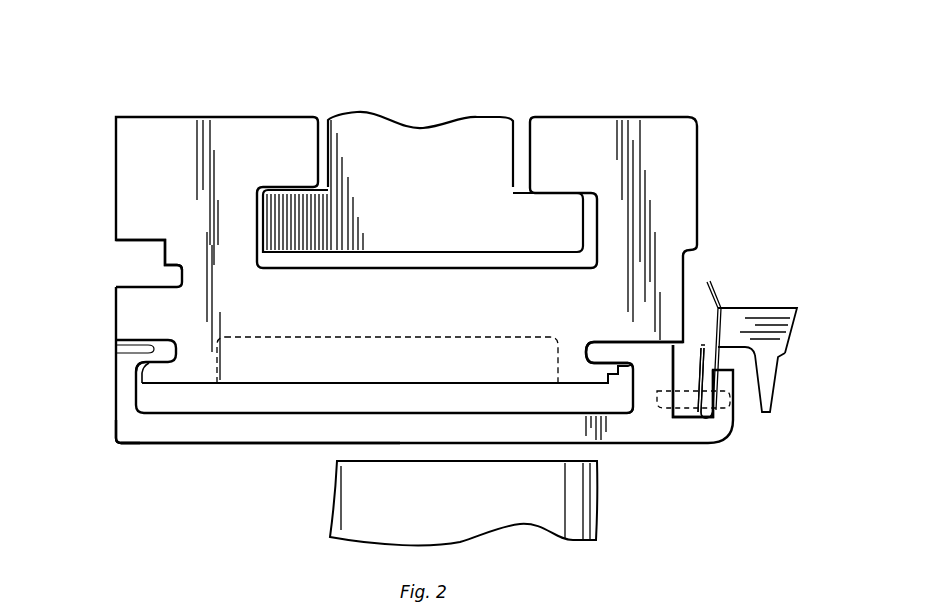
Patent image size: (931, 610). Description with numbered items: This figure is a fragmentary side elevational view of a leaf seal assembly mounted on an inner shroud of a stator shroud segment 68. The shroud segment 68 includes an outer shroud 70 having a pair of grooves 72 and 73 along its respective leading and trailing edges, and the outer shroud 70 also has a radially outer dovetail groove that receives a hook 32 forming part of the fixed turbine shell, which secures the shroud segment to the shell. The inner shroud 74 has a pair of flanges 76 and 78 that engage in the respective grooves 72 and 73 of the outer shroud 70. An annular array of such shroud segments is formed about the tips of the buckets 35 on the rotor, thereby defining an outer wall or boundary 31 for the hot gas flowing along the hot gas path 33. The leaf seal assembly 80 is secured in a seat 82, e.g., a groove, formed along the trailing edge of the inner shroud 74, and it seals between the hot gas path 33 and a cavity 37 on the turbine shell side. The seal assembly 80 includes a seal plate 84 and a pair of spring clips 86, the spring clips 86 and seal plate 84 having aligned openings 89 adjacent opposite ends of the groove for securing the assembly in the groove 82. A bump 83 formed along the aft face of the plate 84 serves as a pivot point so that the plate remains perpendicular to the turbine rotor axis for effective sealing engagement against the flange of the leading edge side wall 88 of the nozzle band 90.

The stator shroud segment 68 is at (105, 122).
The hook 32 is at (383, 138).
The outer shroud 70 is at (181, 229).
The groove 72 is at (150, 348).
The flange 76 is at (140, 361).
The inner shroud 74 is at (142, 432).
The outer wall or boundary 31 is at (420, 443).
The hot gas path 33 is at (112, 493).
The buckets 35 is at (550, 518).
The groove 73 is at (627, 352).
The flange 78 is at (610, 366).
The seat 82 is at (677, 419).
The aligned openings 89 is at (718, 410).
The bump 83 is at (697, 357).
The spring clips 86 is at (708, 350).
The seal plate 84 is at (708, 287).
The leading edge side wall 88 is at (747, 315).
The nozzle band 90 is at (785, 350).
The leaf seal assembly 80 is at (726, 227).
The cavity 37 is at (795, 221).